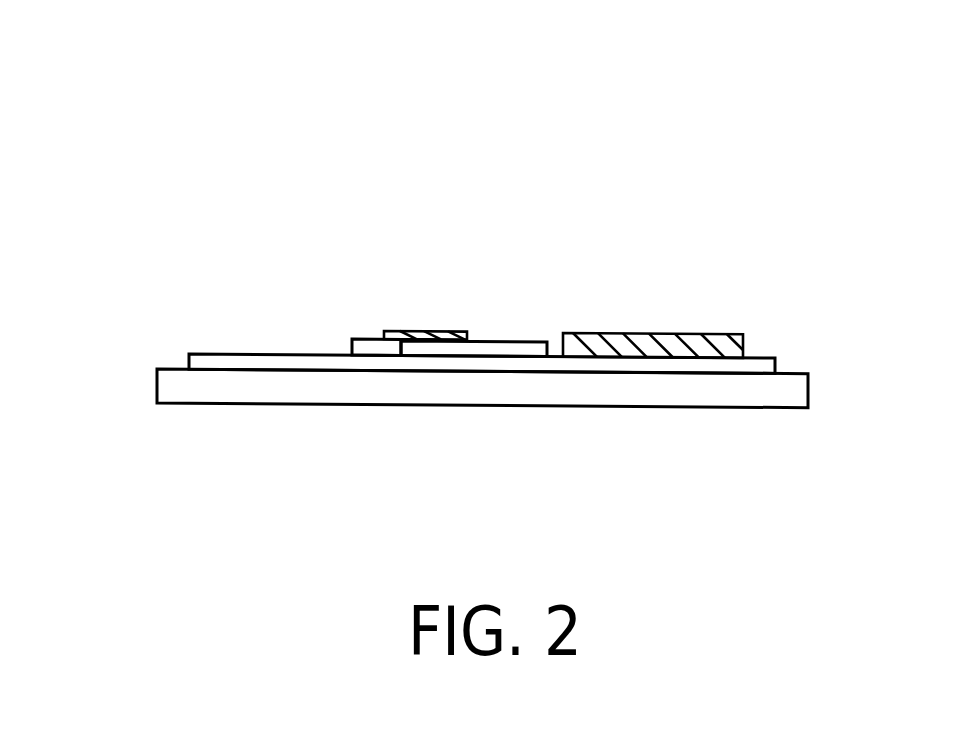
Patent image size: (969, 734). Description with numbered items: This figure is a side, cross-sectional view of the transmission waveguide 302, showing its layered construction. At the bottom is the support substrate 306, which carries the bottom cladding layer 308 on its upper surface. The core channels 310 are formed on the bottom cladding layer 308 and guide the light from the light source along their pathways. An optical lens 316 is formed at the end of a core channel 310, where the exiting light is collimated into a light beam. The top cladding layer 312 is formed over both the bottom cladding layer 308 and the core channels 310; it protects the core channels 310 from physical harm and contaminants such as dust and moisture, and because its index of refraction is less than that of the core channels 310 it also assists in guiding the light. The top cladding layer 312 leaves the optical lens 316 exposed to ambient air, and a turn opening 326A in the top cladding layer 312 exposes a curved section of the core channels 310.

The transmission waveguide 302 is at (656, 86).
The support substrate 306 is at (157, 388).
The bottom cladding layer 308 is at (188, 362).
The core channels 310 is at (525, 340).
The top cladding layer 312 is at (417, 332).
The optical lenses 316 is at (352, 347).
The turn opening 326A is at (506, 258).